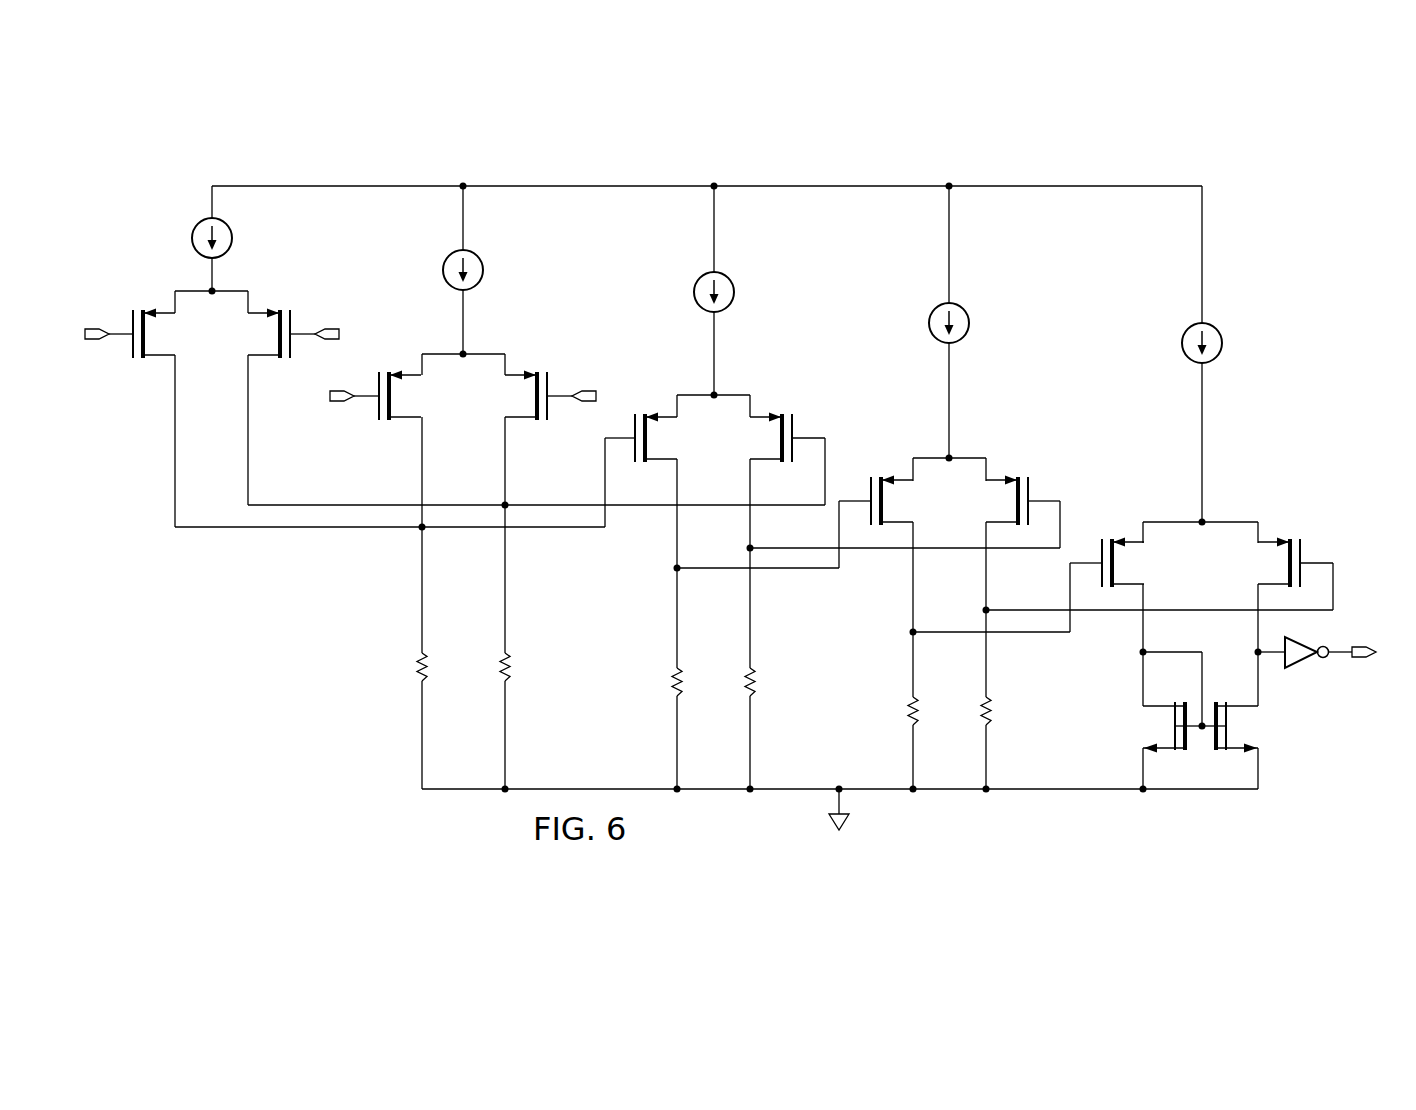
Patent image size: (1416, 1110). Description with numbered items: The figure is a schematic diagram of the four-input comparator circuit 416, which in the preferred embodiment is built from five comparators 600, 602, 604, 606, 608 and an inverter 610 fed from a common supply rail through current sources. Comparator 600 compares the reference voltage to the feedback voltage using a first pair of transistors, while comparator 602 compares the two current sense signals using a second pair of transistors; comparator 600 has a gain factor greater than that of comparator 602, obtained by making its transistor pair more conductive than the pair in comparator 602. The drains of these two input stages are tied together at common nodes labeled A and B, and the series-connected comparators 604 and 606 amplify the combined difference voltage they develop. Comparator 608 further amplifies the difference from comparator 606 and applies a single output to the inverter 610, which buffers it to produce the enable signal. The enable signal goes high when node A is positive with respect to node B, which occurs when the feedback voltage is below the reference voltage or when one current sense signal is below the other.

The 4-input comparator circuit 416 is at (998, 163).
The comparator 600 is at (173, 268).
The comparator 602 is at (421, 333).
The comparator 604 is at (677, 377).
The comparator 606 is at (990, 437).
The comparator 608 is at (1246, 499).
The inverter 610 is at (1310, 665).